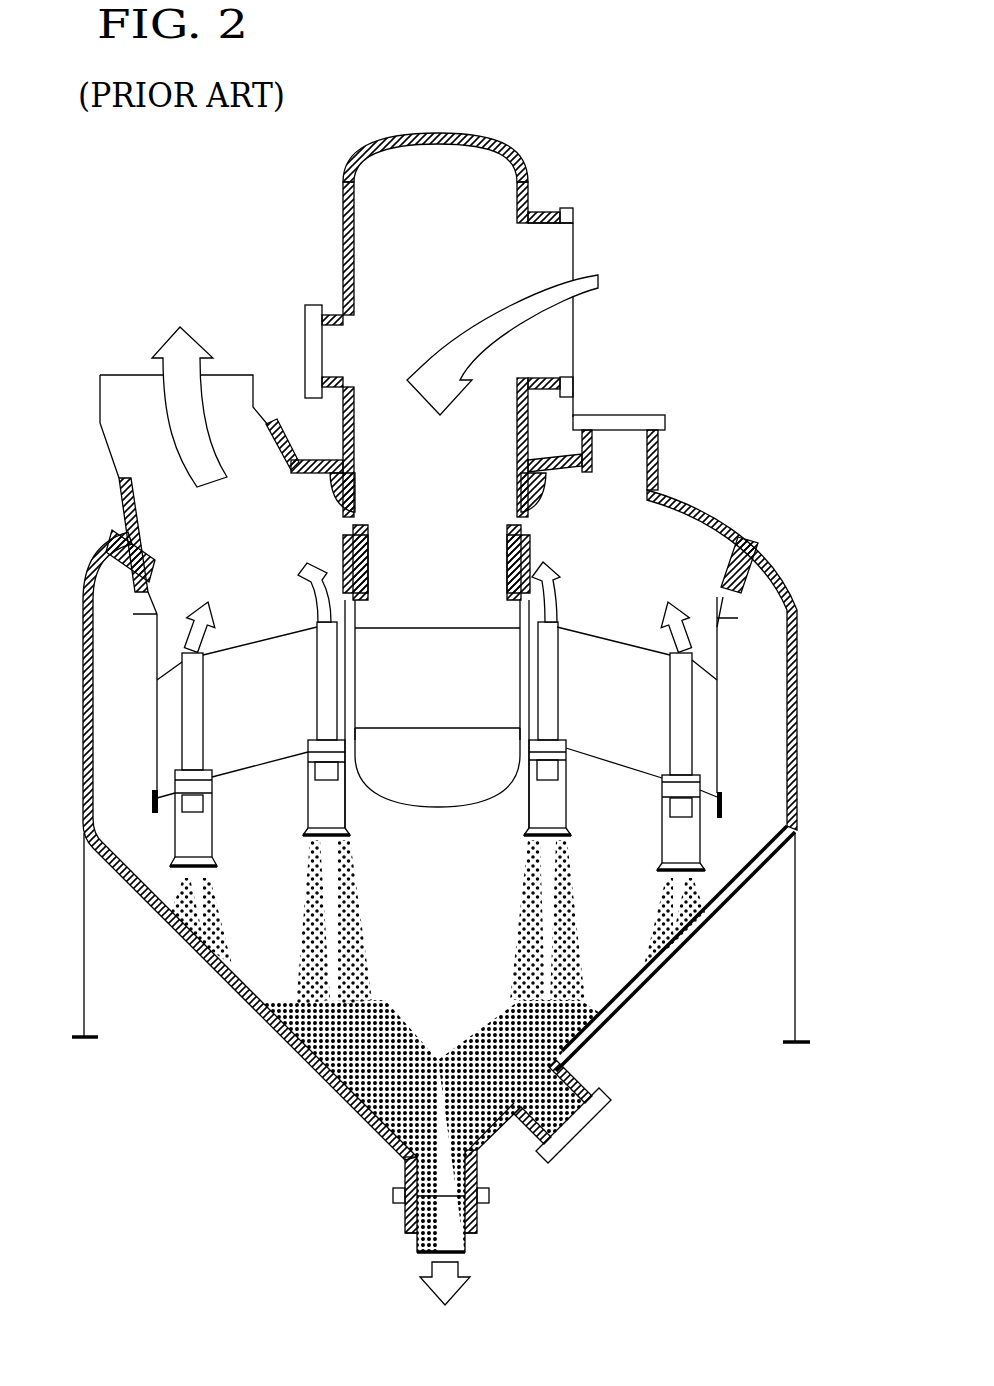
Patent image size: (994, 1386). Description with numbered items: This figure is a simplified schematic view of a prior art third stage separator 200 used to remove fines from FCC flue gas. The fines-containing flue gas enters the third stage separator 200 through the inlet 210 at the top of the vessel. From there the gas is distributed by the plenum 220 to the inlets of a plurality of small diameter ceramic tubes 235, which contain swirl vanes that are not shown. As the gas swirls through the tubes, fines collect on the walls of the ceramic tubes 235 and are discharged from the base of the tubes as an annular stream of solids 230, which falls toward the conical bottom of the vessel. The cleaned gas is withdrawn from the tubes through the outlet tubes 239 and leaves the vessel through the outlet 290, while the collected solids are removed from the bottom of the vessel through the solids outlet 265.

The third stage separator 200 is at (705, 500).
The inlet 210 is at (543, 220).
The plenum 220 is at (283, 709).
The annular stream of solids 230 is at (256, 913).
The small diameter ceramic tubes 235 is at (347, 812).
The outlet tubes 239 is at (313, 622).
The solids outlet 265 is at (478, 1210).
The outlet 290 is at (98, 422).